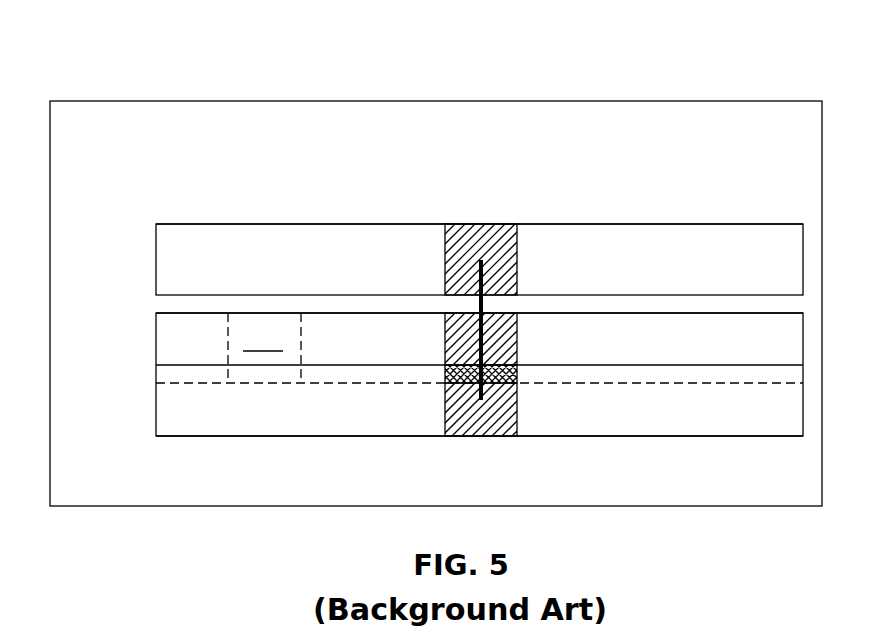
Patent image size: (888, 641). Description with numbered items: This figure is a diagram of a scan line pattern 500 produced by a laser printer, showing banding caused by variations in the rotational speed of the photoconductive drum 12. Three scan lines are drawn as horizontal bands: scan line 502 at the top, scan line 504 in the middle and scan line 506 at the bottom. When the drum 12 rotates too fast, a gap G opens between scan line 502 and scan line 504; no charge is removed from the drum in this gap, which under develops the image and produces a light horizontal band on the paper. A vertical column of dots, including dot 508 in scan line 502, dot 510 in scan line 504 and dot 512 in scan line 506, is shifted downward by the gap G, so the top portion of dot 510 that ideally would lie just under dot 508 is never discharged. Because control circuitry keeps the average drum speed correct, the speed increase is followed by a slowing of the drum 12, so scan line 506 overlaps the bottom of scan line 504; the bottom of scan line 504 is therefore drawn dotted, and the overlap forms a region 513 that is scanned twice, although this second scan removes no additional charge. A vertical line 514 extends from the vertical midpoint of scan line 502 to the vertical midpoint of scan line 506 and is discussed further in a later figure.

The photoconductive drum 12 is at (266, 101).
The scan line pattern 500 is at (482, 183).
The scan line 502 is at (155, 224).
The gap G is at (155, 295).
The scan line 504 is at (155, 313).
The scan line 506 is at (155, 365).
The dot 508 is at (508, 262).
The dot 510 is at (505, 335).
The dot 512 is at (497, 412).
The region 513 is at (516, 375).
The vertical line 514 is at (481, 260).